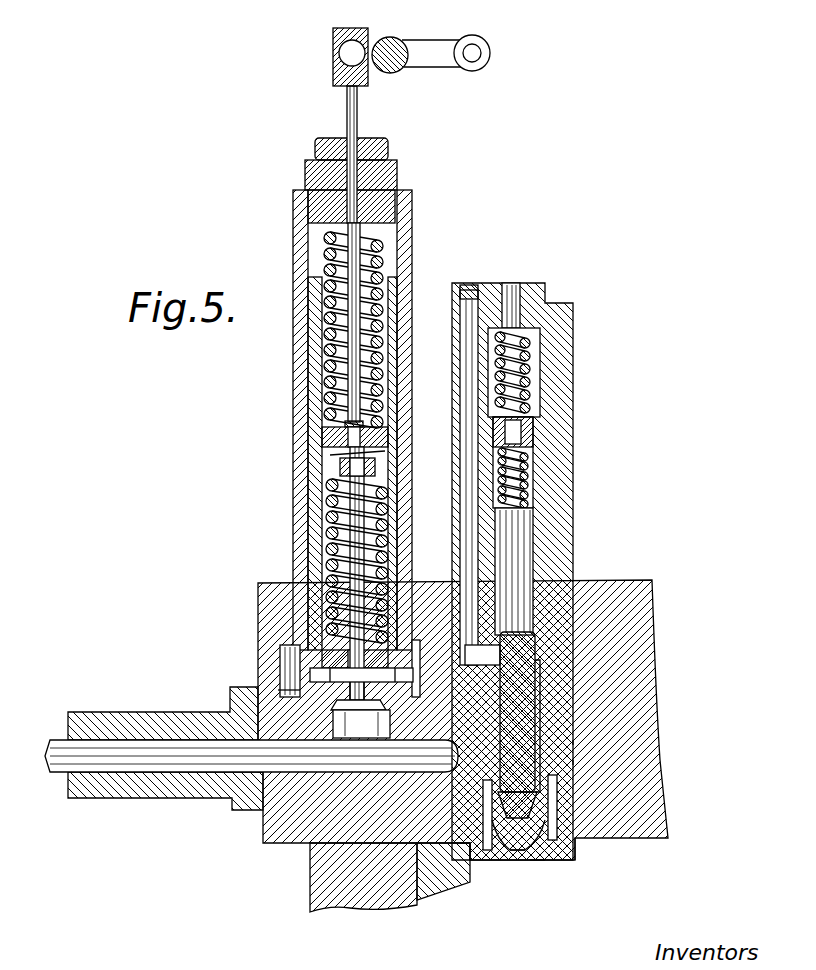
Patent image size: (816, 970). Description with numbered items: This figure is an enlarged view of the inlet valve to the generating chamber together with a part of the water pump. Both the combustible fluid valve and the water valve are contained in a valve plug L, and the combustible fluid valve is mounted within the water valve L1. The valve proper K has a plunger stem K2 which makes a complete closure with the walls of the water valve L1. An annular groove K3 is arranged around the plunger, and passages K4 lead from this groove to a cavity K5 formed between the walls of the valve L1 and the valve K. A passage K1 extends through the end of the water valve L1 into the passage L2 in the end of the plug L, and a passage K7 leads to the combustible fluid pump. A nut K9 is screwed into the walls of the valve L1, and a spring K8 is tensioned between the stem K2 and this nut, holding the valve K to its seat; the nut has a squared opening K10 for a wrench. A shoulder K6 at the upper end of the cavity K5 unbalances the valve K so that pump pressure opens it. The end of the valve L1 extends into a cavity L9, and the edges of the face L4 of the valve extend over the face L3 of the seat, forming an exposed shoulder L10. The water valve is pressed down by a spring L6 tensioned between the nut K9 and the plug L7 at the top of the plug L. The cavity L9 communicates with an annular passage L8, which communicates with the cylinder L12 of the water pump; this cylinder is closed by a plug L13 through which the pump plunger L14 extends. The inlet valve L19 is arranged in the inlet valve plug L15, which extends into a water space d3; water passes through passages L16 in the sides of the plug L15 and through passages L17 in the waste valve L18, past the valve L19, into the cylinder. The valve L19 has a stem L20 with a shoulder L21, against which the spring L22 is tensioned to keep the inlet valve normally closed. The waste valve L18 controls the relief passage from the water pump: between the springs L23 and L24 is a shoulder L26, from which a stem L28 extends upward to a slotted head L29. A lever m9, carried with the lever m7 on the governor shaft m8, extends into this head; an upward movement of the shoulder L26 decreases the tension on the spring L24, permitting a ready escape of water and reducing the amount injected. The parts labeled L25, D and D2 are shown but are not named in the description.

The lever m7 is at (452, 42).
The shaft m8 is at (393, 42).
The lever m9 is at (352, 53).
The slot L29 is at (336, 80).
The stem L28 is at (360, 115).
The cap nut L25 is at (392, 168).
The spring L23 is at (378, 252).
The inlet valve plug L15 is at (296, 358).
The shoulder L26 is at (365, 432).
The spring L22 is at (372, 463).
The shoulder L21 is at (340, 467).
The stem L20 is at (368, 488).
The spring L24 is at (330, 500).
The passage K7 is at (465, 512).
The passages L17 is at (392, 653).
The water space d3 is at (297, 647).
The passages L16 is at (303, 675).
The waste valve L18 is at (307, 683).
The inlet valve L19 is at (370, 708).
The cylinder L12 is at (424, 756).
The pump plunger L14 is at (182, 757).
The plug L13 is at (262, 812).
The cylinder head part D2 is at (366, 877).
The cylinder head D is at (463, 739).
The plug L7 is at (542, 286).
The spring L6 is at (525, 342).
The squared opening K10 is at (518, 428).
The nut K9 is at (525, 436).
The spring K8 is at (527, 470).
The valve plug L is at (560, 552).
The annular groove K3 is at (520, 640).
The plunger stem K2 is at (535, 658).
The passages K4 is at (536, 693).
The annular passage L8 is at (570, 755).
The valve K is at (577, 753).
The water valve L1 is at (556, 783).
The face L4 is at (553, 799).
The cavity L9 is at (555, 816).
The exposed shoulder L10 is at (576, 841).
The passage K1 is at (500, 858).
The passage L2 is at (520, 850).
The face L3 is at (540, 862).
The cavity K5 is at (485, 800).
The shoulder K6 is at (470, 845).